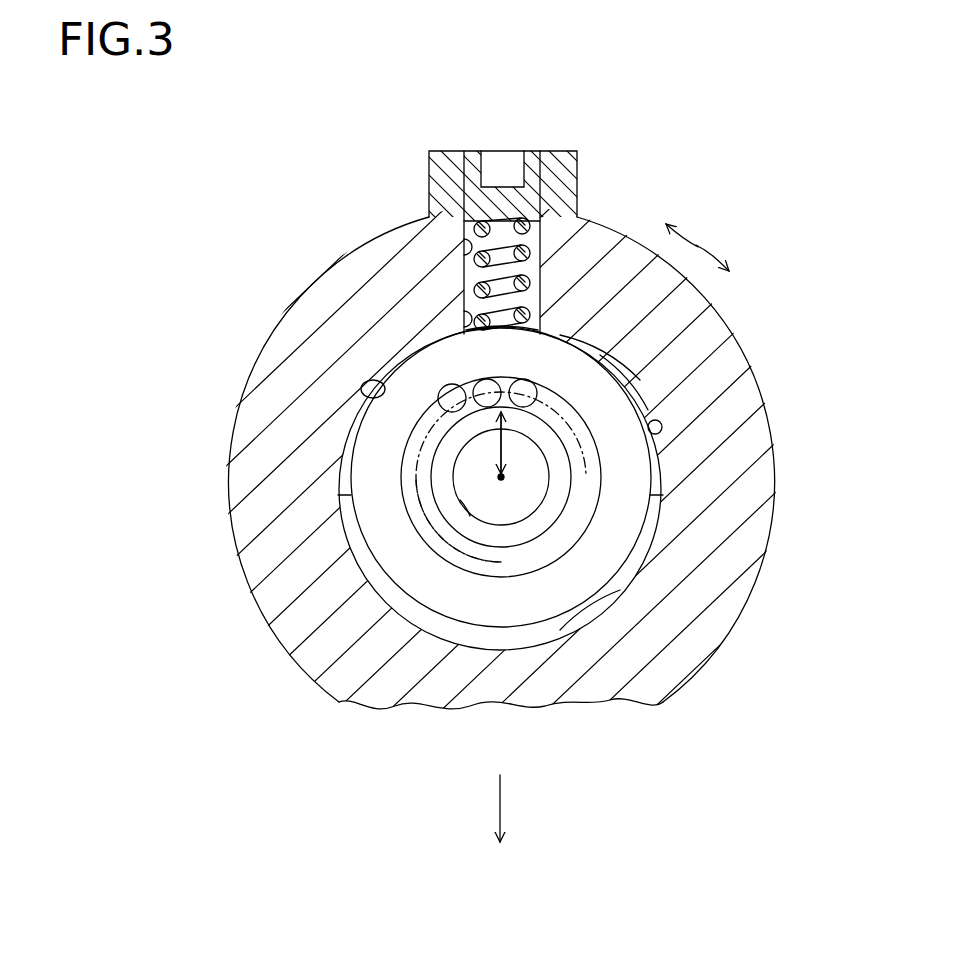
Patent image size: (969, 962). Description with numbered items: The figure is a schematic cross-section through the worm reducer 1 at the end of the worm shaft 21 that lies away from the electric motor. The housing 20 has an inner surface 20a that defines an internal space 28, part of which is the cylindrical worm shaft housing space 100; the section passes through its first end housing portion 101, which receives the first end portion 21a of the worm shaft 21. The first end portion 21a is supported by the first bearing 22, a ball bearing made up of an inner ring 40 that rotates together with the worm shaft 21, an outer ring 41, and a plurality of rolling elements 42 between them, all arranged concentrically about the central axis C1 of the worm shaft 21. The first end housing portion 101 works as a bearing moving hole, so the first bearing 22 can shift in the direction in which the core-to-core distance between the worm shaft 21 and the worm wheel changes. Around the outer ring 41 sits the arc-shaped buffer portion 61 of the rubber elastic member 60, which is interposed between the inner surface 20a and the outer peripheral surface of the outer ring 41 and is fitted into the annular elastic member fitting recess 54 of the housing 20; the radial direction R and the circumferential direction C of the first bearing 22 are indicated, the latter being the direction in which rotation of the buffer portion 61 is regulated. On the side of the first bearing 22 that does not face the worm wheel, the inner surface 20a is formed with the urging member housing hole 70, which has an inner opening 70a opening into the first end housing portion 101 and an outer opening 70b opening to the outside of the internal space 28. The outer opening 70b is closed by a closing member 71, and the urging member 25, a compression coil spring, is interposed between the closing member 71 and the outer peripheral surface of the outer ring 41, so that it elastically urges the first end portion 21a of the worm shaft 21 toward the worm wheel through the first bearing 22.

The worm reducer 1 is at (612, 204).
The housing 20 is at (737, 392).
The inner surface 20a is at (660, 433).
The worm shaft 21 is at (497, 527).
The first end portion 21a is at (480, 494).
The first bearing 22 is at (594, 602).
The urging member 25 is at (467, 287).
The internal space 28 is at (666, 476).
The inner ring 40 is at (442, 476).
The outer ring 41 is at (385, 520).
The rolling elements 42 is at (500, 384).
The elastic member fitting recess 54 is at (375, 390).
The elastic member 60 is at (620, 358).
The buffer portion 61 is at (644, 386).
The urging member housing hole 70 is at (463, 240).
The inner opening 70a is at (463, 323).
The outer opening 70b is at (498, 118).
The closing member 71 is at (495, 194).
The worm shaft housing space 100 is at (630, 570).
The first end housing portion 101 is at (640, 537).
The radial direction R is at (475, 446).
The circumferential direction C is at (700, 243).
The central axis C1 is at (504, 482).